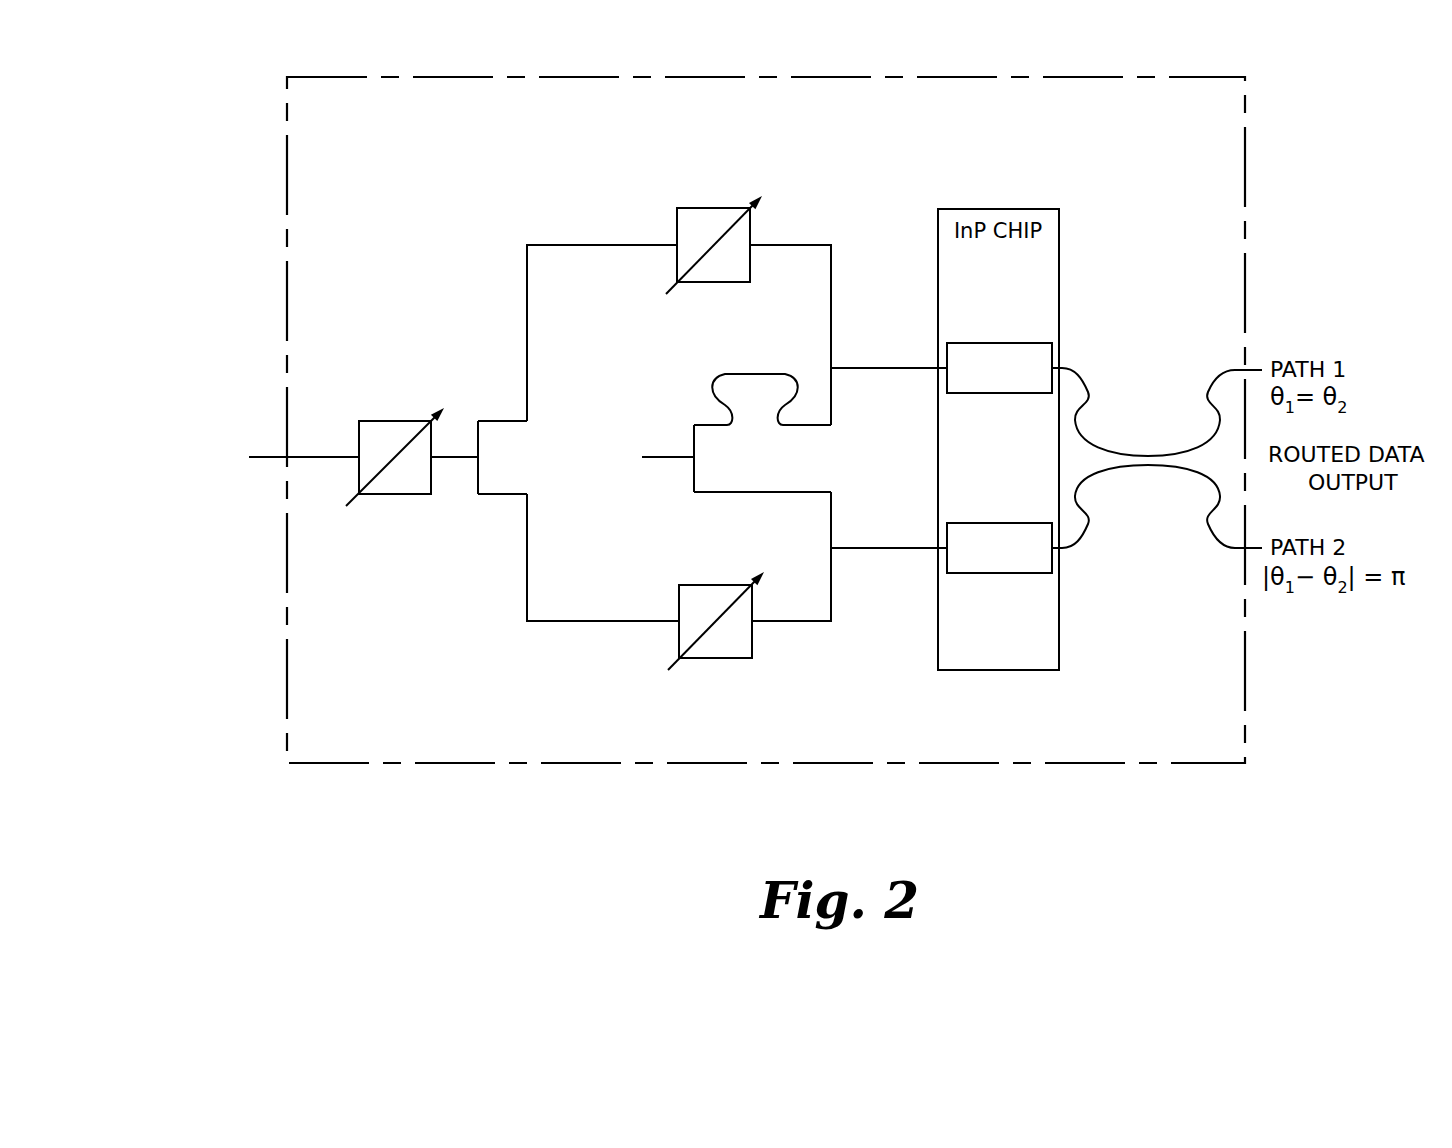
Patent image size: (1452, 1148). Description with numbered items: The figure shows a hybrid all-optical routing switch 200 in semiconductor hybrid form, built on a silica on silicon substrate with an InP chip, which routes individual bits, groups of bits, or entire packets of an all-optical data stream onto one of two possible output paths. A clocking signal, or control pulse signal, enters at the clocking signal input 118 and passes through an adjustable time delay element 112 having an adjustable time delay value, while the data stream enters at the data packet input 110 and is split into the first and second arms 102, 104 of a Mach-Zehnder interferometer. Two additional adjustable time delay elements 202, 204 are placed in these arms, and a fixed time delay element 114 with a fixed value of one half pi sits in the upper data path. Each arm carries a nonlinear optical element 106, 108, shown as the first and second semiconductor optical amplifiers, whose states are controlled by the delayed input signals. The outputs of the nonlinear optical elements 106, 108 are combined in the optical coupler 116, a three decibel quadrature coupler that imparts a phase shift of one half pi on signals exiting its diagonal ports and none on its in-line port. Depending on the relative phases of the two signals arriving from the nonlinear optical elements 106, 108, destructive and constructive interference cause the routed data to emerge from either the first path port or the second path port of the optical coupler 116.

The all-optical routing switch 200 is at (258, 230).
The time delay element 202 is at (392, 420).
The time delay element 204 is at (716, 208).
The time delay element 112 is at (712, 585).
The clocking signal input 118 is at (264, 460).
The data packet input 110 is at (660, 468).
The fixed time delay element 114 is at (718, 374).
The first arm 102 is at (849, 368).
The second arm 104 is at (849, 548).
The nonlinear optical element 106 is at (969, 343).
The nonlinear optical element 108 is at (963, 573).
The optical coupler 116 is at (1098, 443).